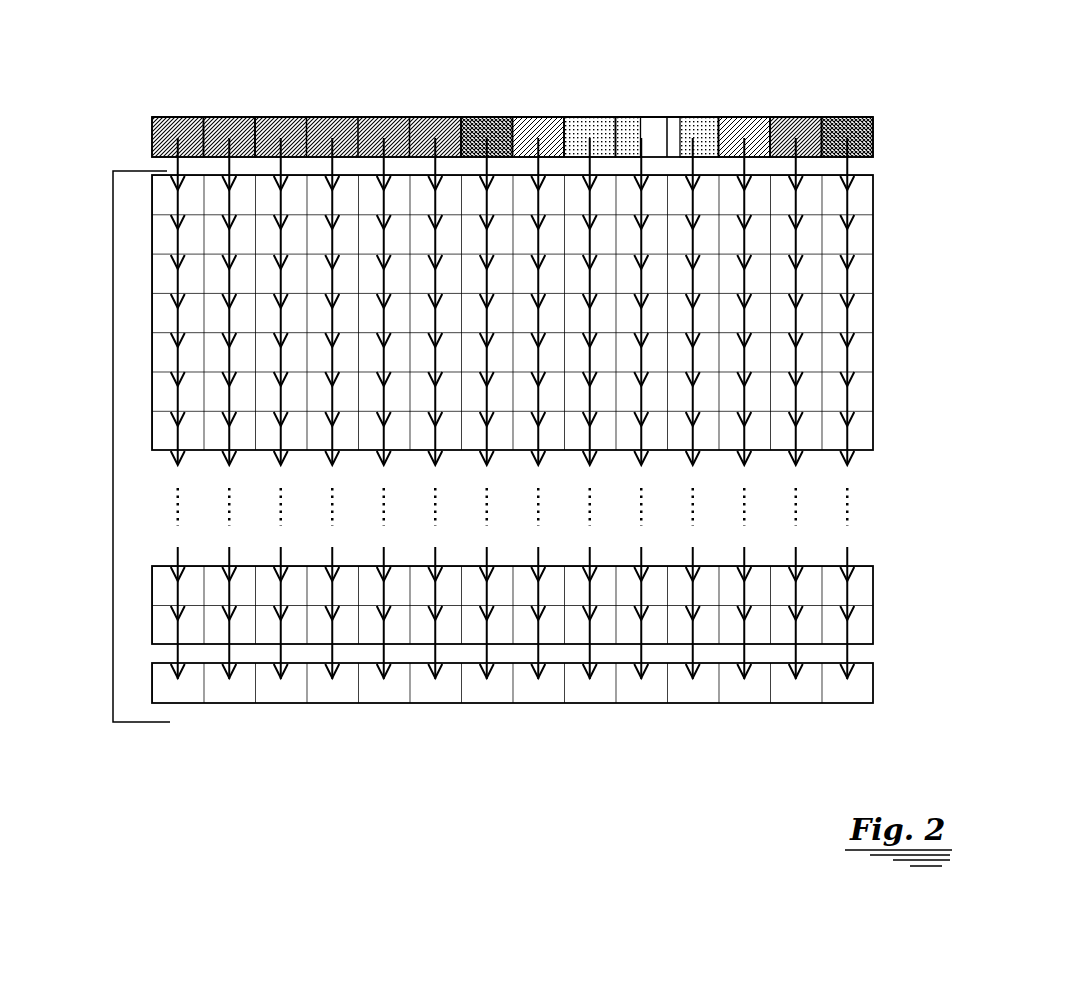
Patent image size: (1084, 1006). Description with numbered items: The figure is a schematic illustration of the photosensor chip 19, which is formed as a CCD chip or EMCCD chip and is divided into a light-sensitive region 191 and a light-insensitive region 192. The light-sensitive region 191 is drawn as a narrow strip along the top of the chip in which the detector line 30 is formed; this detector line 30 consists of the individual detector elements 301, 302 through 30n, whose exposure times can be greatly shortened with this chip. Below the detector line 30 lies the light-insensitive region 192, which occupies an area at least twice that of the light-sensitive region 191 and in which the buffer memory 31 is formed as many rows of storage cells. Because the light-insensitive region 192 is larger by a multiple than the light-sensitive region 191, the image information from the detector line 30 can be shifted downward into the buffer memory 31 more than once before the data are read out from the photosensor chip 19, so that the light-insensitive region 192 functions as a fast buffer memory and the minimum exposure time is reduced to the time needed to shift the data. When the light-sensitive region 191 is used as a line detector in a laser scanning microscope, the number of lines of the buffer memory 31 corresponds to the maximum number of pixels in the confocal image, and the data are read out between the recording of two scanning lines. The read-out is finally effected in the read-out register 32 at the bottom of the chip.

The photosensor chip 19 is at (110, 140).
The light-sensitive region 191 is at (792, 117).
The light-insensitive region 192 is at (110, 680).
The detector line 30 is at (873, 128).
The detector element 301 is at (180, 117).
The detector element 302 is at (233, 117).
The detector element 30n is at (860, 117).
The buffer memory 31 is at (873, 185).
The read-out register 32 is at (843, 705).